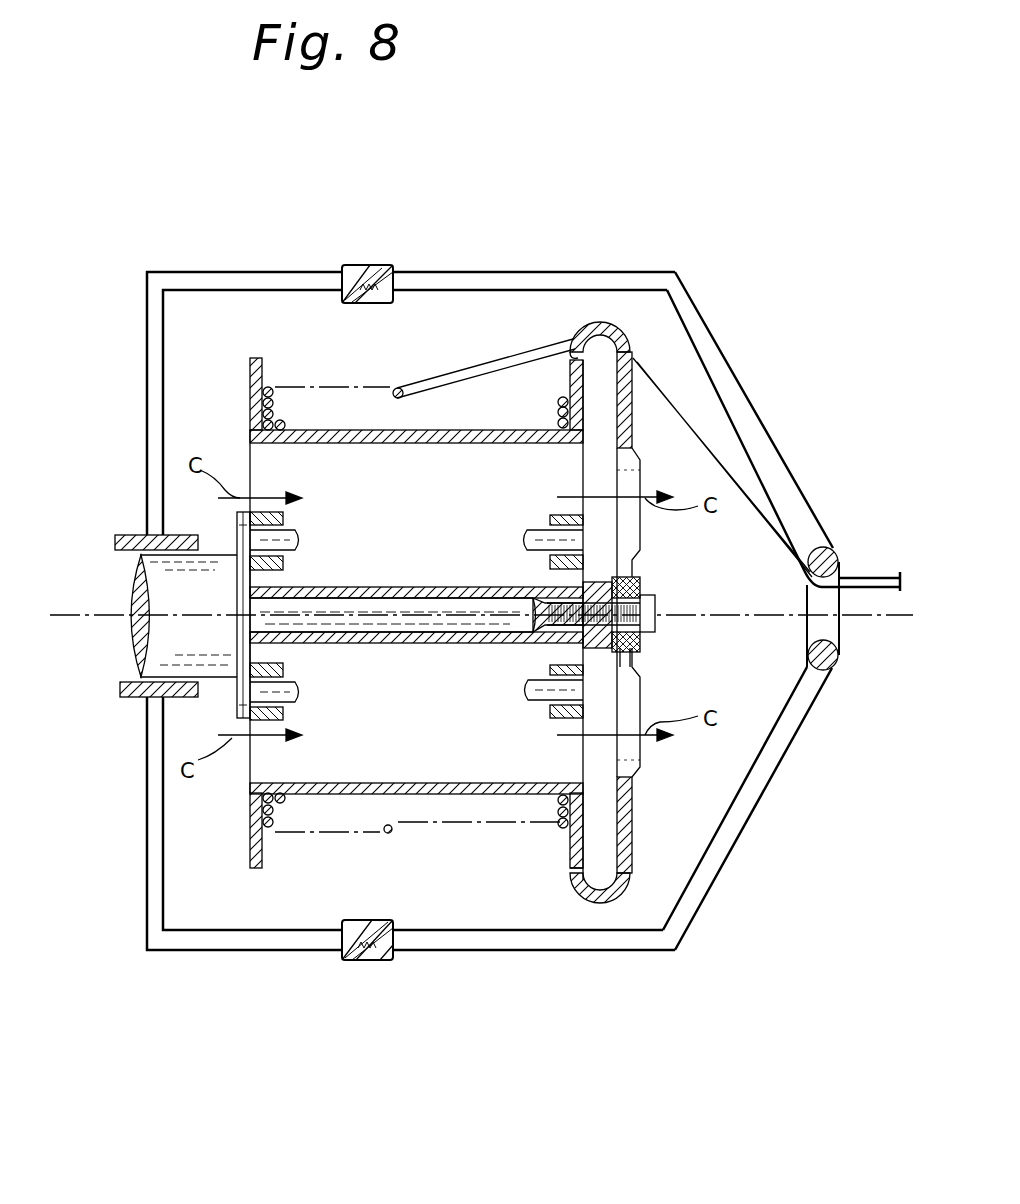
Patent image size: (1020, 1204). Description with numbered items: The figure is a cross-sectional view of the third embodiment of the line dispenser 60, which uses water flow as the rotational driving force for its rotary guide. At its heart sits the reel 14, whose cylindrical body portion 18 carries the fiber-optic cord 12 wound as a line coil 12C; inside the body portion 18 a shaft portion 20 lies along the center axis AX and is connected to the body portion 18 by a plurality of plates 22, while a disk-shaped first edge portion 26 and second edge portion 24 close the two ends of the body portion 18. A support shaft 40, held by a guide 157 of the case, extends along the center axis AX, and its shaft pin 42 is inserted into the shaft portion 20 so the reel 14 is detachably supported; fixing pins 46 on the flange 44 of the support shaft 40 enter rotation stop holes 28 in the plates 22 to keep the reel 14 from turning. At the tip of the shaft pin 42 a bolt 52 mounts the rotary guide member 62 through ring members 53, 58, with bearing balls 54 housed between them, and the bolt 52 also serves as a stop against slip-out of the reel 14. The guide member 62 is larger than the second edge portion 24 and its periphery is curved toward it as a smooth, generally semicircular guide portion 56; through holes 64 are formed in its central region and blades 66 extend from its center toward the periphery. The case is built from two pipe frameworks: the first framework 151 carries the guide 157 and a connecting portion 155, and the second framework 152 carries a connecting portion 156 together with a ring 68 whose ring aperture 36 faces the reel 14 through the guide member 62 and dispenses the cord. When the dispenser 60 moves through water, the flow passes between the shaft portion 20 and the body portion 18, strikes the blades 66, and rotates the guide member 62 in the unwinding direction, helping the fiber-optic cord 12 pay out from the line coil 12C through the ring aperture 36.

The fiber-optic cord 12 is at (661, 380).
The line coil 12C is at (393, 835).
The reel 14 is at (364, 377).
The cylindrical body portion 18 is at (436, 445).
The shaft portion 20 is at (430, 586).
The plates 22 is at (258, 457).
The second edge portion 24 is at (572, 845).
The first edge portion 26 is at (262, 865).
The rotation stop holes 28 is at (541, 520).
The ring aperture 36 is at (835, 630).
The support shaft 40 is at (232, 660).
The shaft pin 42 is at (442, 636).
The flange 44 is at (238, 548).
The fixing pins 46 is at (298, 532).
The bolt 52 is at (652, 598).
The ring member 53 is at (642, 590).
The bearing balls 54 is at (640, 642).
The curved portion (guide portion) 56 is at (626, 878).
The ring member 58 is at (628, 660).
The line dispenser 60 is at (782, 442).
The guide member 62 is at (628, 830).
The through holes 64 is at (626, 477).
The blades 66 is at (628, 542).
The ring 68 is at (836, 671).
The first framework 151 is at (228, 958).
The second framework 152 is at (548, 955).
The connecting portion 155 is at (358, 265).
The connecting portion 156 is at (385, 266).
The guide 157 is at (130, 700).
The center axis AX is at (74, 618).